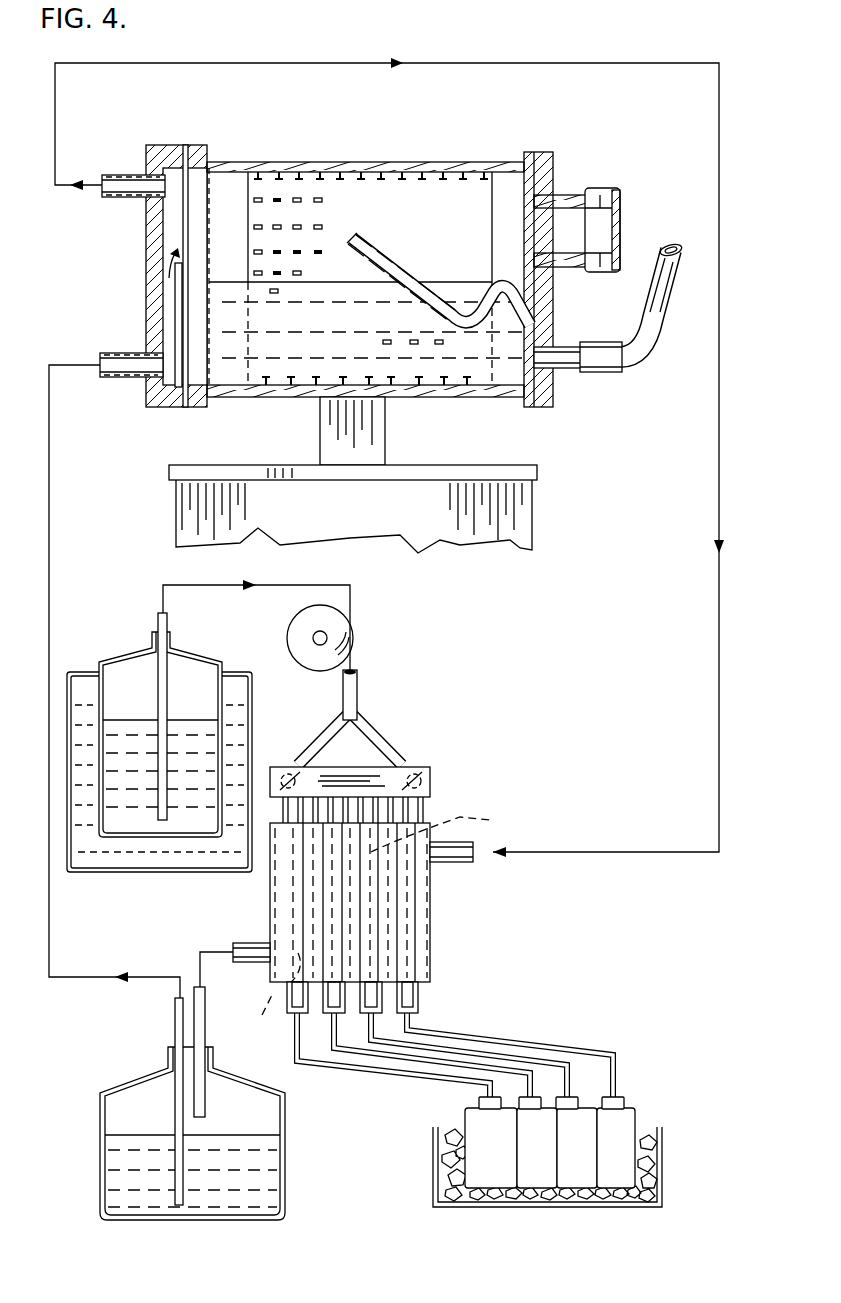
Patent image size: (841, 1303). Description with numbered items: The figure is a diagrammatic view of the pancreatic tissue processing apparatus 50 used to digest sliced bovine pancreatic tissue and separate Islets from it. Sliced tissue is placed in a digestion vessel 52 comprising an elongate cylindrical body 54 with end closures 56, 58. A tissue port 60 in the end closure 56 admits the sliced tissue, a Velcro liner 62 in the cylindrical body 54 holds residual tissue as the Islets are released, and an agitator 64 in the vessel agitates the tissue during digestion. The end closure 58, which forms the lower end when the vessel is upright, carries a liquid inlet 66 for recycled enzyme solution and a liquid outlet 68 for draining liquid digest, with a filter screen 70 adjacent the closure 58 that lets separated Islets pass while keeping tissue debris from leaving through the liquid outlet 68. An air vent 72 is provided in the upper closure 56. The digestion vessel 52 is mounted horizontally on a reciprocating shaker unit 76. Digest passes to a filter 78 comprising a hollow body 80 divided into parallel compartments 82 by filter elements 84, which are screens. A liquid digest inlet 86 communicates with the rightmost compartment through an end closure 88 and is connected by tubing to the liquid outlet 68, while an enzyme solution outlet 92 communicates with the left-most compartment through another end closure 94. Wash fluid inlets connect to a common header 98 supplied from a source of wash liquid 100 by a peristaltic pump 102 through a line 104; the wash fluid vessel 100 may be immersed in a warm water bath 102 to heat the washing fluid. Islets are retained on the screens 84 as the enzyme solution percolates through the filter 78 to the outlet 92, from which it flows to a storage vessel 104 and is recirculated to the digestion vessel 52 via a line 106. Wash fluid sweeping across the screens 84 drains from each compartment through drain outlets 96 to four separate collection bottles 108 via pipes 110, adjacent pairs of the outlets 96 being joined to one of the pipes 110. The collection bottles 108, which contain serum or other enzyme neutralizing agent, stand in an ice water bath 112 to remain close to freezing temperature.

The apparatus 50 is at (552, 37).
The digestion vessel 52 is at (388, 152).
The elongate cylindrical body 54 is at (281, 162).
The end closure 56 is at (556, 165).
The end closure 58 is at (140, 246).
The tissue port 60 is at (608, 222).
The Velcro liner 62 is at (322, 200).
The agitator 64 is at (388, 263).
The liquid inlet 66 is at (112, 378).
The liquid outlet 68 is at (118, 176).
The filter screen 70 is at (213, 195).
The air vent 72 is at (673, 318).
The reciprocating shaker unit 76 is at (517, 508).
The filter 78 is at (447, 762).
The hollow body 80 is at (432, 893).
The compartments 82 is at (405, 932).
The filter elements 84 is at (382, 921).
The liquid digest inlet 86 is at (465, 862).
The end closure 88 is at (435, 950).
The enzyme solution outlet 92 is at (250, 963).
The end closure 94 is at (270, 925).
The drain outlets 96 is at (420, 1009).
The common header 98 is at (432, 781).
The wash fluid vessel 100 is at (123, 652).
The peristaltic pump 102 is at (292, 628).
The line 104 is at (350, 588).
The line 106 is at (51, 552).
The collection bottles 108 is at (633, 1124).
The pipes 110 is at (540, 1047).
The ice water bath 112 is at (433, 1148).